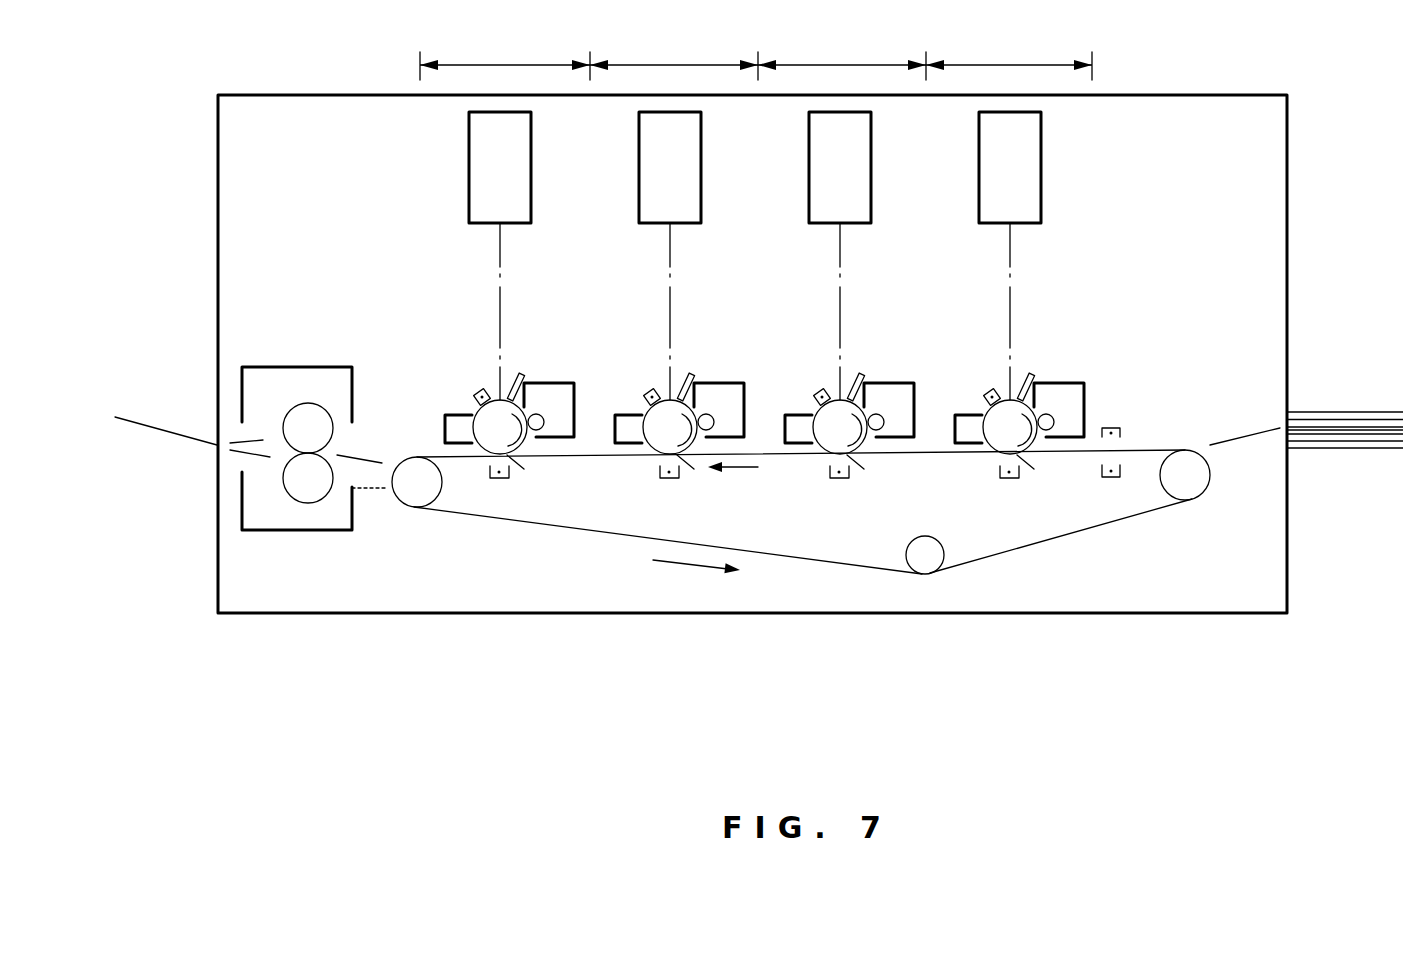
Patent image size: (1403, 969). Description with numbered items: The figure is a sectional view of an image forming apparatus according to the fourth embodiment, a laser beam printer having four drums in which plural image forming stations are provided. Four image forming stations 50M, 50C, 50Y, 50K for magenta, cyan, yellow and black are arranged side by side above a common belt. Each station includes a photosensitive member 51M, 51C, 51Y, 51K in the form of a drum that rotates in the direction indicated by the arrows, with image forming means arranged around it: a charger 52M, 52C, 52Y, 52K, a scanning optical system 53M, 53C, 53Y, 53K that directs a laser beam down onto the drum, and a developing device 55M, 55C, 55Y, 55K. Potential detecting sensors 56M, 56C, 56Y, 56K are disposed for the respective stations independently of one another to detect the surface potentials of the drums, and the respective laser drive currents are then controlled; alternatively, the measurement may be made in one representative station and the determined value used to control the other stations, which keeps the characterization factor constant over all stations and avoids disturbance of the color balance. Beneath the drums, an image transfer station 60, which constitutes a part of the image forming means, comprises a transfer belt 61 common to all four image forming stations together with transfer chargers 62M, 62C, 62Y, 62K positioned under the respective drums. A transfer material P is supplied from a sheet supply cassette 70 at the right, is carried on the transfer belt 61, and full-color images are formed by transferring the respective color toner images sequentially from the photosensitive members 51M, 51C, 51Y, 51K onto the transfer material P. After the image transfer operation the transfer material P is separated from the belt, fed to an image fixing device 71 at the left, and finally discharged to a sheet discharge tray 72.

The black image forming station 50K is at (505, 52).
The yellow image forming station 50Y is at (674, 52).
The cyan image forming station 50C is at (842, 52).
The magenta image forming station 50M is at (1009, 52).
The photosensitive member 51K is at (508, 392).
The photosensitive member 51Y is at (678, 398).
The photosensitive member 51C is at (848, 398).
The photosensitive member 51M is at (1018, 398).
The charger 52K is at (480, 390).
The charger 52Y is at (648, 390).
The charger 52C is at (818, 390).
The charger 52M is at (990, 390).
The scanning optical system 53K is at (531, 168).
The scanning optical system 53Y is at (701, 168).
The scanning optical system 53C is at (871, 168).
The scanning optical system 53M is at (1041, 168).
The developing device 55K is at (550, 385).
The developing device 55Y is at (722, 384).
The developing device 55C is at (892, 384).
The developing device 55M is at (1085, 393).
The potential detecting sensor 56K is at (530, 372).
The potential detecting sensor 56Y is at (700, 372).
The potential detecting sensor 56C is at (865, 372).
The potential detecting sensor 56M is at (1035, 375).
The image transfer station 60 is at (868, 585).
The transfer belt 61 is at (780, 456).
The transfer charger 62K is at (500, 480).
The transfer charger 62Y is at (670, 480).
The transfer charger 62C is at (840, 480).
The transfer charger 62M is at (1010, 480).
The sheet supply cassette 70 is at (1340, 452).
The image fixing device 71 is at (305, 365).
The sheet discharge tray 72 is at (142, 423).
The transfer material P is at (1343, 422).